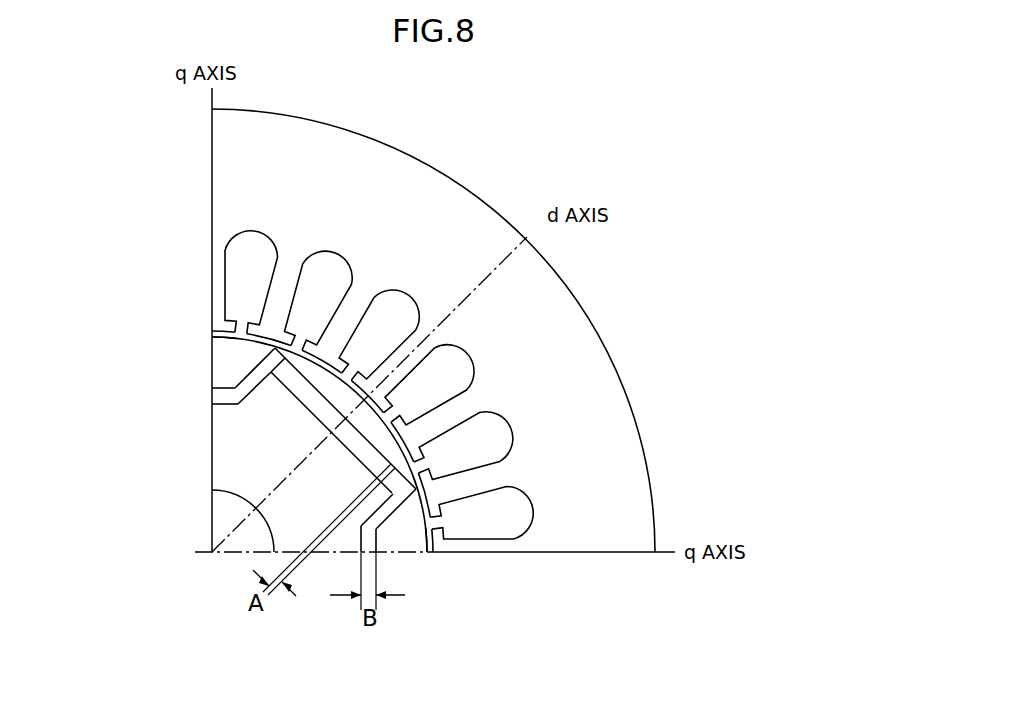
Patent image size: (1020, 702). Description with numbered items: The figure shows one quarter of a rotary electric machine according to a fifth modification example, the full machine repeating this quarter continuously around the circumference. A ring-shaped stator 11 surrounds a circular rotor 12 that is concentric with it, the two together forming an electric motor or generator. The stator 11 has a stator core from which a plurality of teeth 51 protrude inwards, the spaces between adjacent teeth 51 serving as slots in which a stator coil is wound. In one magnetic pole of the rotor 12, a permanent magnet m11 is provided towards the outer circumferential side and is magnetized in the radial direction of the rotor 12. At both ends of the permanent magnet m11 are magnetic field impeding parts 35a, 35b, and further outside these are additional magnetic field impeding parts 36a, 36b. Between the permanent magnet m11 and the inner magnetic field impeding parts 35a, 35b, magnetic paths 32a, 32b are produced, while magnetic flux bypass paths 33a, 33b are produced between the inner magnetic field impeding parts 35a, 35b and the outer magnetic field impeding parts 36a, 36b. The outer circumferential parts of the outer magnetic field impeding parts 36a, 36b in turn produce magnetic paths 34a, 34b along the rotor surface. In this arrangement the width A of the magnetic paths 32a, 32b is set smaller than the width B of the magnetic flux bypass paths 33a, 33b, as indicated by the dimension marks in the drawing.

The stator 11 is at (636, 292).
The teeth 51 is at (283, 292).
The rotor 12 is at (238, 444).
The permanent magnet m11 is at (298, 382).
The magnetic path 32a is at (245, 414).
The magnetic flux bypass path 33a is at (237, 388).
The magnetic path 34a is at (227, 345).
The magnetic field impeding part 35a is at (230, 409).
The magnetic field impeding part 36a is at (226, 368).
The magnetic path 32b is at (384, 545).
The magnetic flux bypass path 33b is at (362, 545).
The magnetic path 34b is at (400, 553).
The magnetic field impeding part 35b is at (358, 530).
The magnetic field impeding part 36b is at (386, 552).